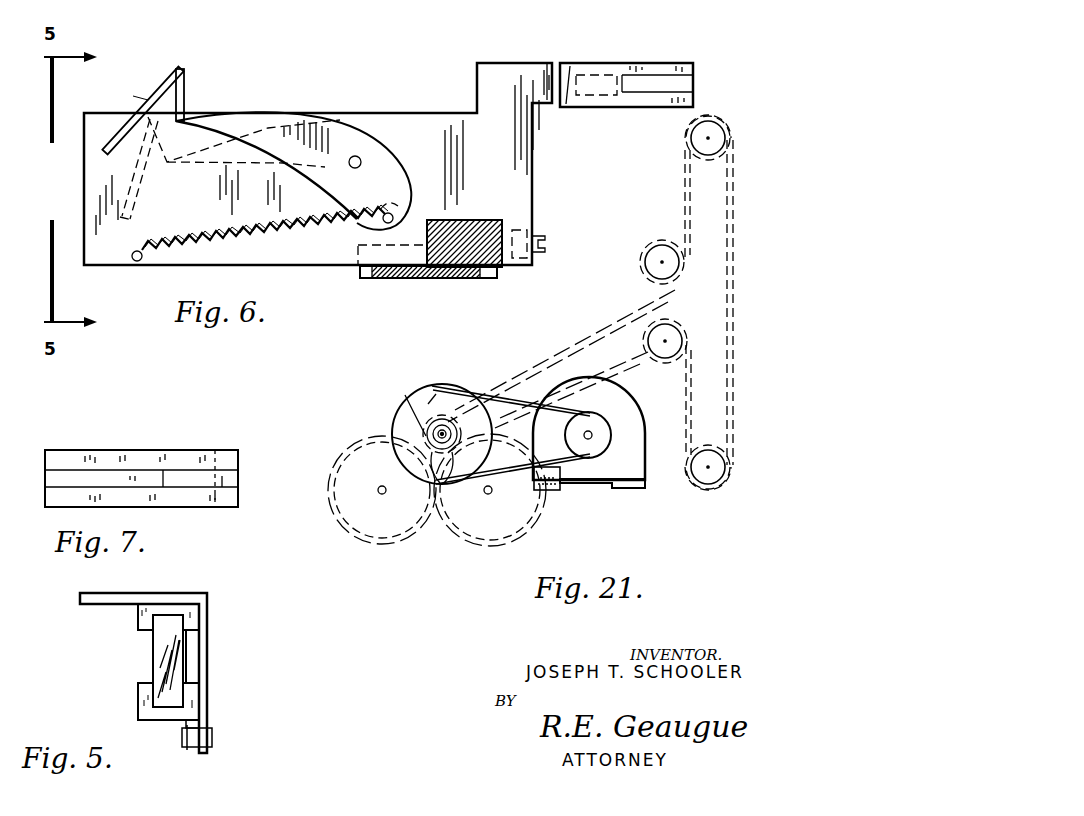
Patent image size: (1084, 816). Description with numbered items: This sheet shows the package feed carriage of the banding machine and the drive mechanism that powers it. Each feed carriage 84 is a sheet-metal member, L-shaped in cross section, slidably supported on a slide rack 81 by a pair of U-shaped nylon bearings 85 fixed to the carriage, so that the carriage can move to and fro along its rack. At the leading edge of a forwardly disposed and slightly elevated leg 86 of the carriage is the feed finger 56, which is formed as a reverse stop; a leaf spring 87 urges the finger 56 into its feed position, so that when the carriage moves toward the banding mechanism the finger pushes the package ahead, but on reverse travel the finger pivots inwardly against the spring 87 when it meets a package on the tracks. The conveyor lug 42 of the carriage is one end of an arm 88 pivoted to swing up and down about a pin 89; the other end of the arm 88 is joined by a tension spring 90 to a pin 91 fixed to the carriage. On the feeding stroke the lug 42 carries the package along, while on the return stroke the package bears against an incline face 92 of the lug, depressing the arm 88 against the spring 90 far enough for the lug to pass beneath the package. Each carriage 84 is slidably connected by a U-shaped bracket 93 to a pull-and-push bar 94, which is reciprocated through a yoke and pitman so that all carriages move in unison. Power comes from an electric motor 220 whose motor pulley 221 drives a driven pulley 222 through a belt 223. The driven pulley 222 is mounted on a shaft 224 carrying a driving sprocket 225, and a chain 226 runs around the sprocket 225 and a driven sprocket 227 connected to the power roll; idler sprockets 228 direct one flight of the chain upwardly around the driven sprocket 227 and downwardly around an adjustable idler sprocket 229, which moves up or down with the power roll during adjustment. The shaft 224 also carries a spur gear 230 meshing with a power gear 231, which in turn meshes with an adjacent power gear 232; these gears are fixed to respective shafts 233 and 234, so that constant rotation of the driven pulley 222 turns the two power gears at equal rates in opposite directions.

In FIG. 6, the conveyor lug 42 is at (193, 72).
In FIG. 6, the feed finger 56 is at (617, 75).
In FIG. 7, the feed finger 56 is at (222, 483).
In FIG. 5, the slide rack 81 is at (158, 660).
In FIG. 6, the feed carriage 84 is at (436, 118).
In FIG. 5, the feed carriage 84 is at (208, 606).
In FIG. 5, the U-shaped bearing 85 is at (140, 697).
In FIG. 6, the leg 86 is at (568, 80).
In FIG. 7, the leg 86 is at (112, 463).
In FIG. 7, the leaf spring 87 is at (217, 452).
In FIG. 6, the arm 88 is at (340, 136).
In FIG. 6, the pin 89 is at (358, 157).
In FIG. 6, the tension spring 90 is at (330, 217).
In FIG. 6, the pin 91 is at (132, 254).
In FIG. 6, the incline face 92 is at (150, 104).
In FIG. 6, the U-shaped bracket 93 is at (362, 276).
In FIG. 6, the pull-and-push bar 94 is at (465, 276).
In FIG. 21, the electric motor 220 is at (589, 432).
In FIG. 21, the motor pulley 221 is at (592, 432).
In FIG. 21, the driven pulley 222 is at (421, 386).
In FIG. 21, the belt 223 is at (552, 481).
In FIG. 21, the shaft 224 is at (470, 396).
In FIG. 21, the driving sprocket 225 is at (418, 369).
In FIG. 21, the chain 226 is at (622, 322).
In FIG. 21, the driven sprocket 227 is at (728, 138).
In FIG. 21, the idler sprocket 228 is at (660, 248).
In FIG. 21, the adjustable idler sprocket 229 is at (700, 480).
In FIG. 21, the spur gear 230 is at (418, 430).
In FIG. 21, the power gear 231 is at (460, 542).
In FIG. 21, the power gear 232 is at (360, 540).
In FIG. 21, the shaft 233 is at (488, 495).
In FIG. 21, the shaft 234 is at (382, 495).